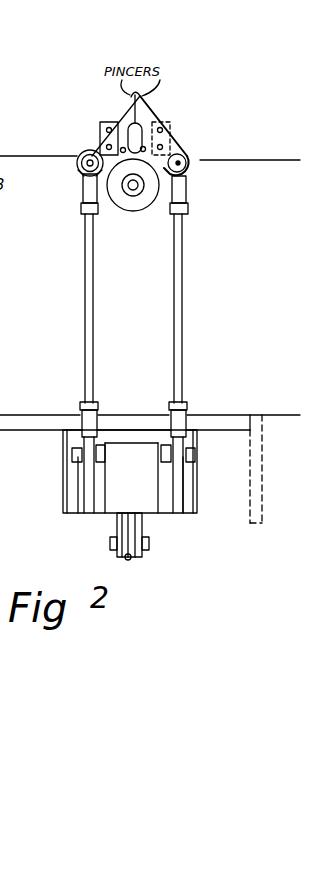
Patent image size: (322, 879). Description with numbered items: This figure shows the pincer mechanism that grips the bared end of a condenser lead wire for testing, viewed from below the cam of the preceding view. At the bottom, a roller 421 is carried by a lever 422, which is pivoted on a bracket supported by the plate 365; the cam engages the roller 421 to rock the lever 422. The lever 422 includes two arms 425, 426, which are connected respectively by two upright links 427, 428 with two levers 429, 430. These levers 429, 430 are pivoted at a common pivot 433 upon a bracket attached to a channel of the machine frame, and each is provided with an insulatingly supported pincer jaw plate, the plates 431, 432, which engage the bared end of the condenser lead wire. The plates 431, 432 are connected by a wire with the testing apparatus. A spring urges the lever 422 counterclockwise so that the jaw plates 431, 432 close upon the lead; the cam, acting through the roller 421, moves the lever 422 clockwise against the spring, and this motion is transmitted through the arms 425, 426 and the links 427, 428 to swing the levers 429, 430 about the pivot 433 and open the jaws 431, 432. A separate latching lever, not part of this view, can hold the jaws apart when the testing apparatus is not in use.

The roller 421 is at (131, 558).
The lever 422 is at (145, 528).
The arm 425 is at (102, 486).
The arm 426 is at (158, 503).
The link 427 is at (85, 305).
The link 428 is at (183, 317).
The lever 429 is at (97, 174).
The lever 430 is at (187, 181).
The pincer jaw plate 431 is at (119, 109).
The pincer jaw plate 432 is at (160, 112).
The pivot 433 is at (136, 191).
The plate 365 is at (150, 458).